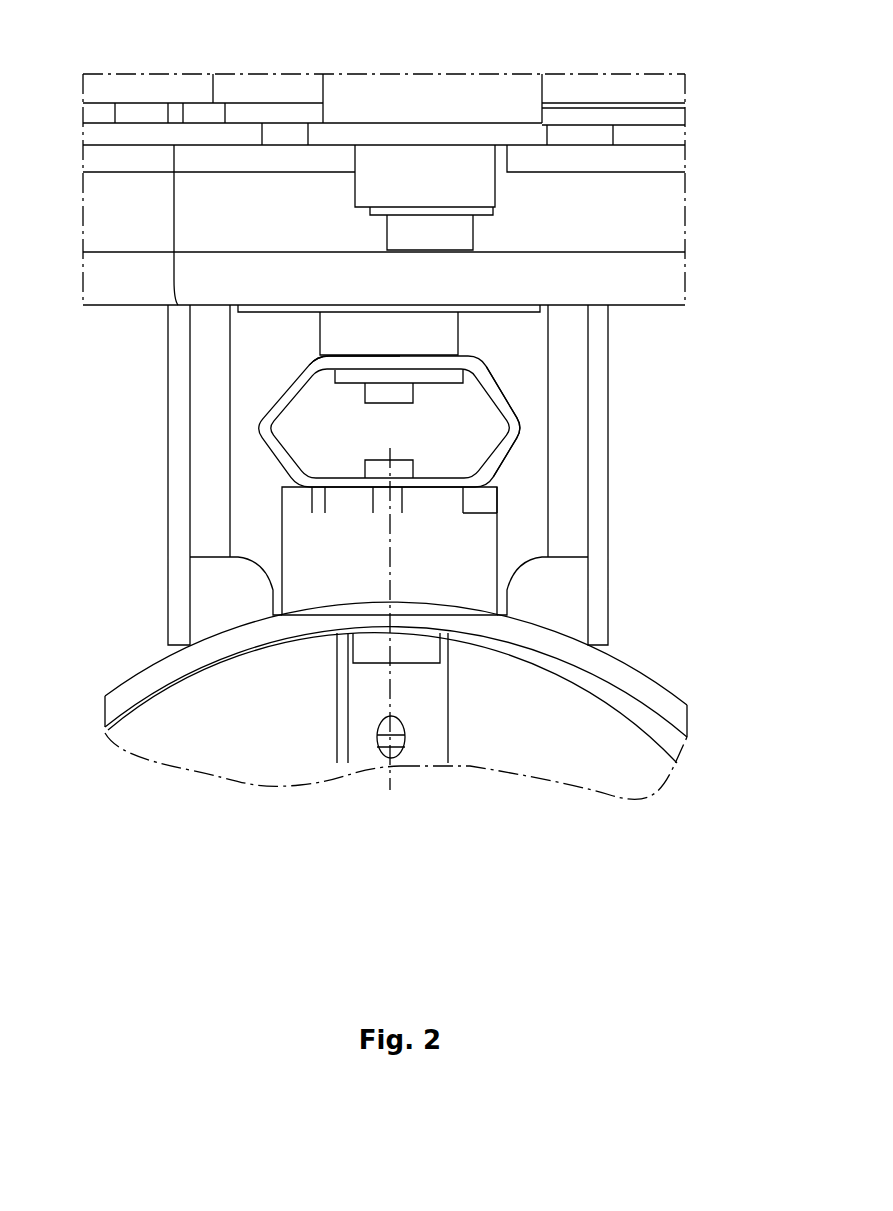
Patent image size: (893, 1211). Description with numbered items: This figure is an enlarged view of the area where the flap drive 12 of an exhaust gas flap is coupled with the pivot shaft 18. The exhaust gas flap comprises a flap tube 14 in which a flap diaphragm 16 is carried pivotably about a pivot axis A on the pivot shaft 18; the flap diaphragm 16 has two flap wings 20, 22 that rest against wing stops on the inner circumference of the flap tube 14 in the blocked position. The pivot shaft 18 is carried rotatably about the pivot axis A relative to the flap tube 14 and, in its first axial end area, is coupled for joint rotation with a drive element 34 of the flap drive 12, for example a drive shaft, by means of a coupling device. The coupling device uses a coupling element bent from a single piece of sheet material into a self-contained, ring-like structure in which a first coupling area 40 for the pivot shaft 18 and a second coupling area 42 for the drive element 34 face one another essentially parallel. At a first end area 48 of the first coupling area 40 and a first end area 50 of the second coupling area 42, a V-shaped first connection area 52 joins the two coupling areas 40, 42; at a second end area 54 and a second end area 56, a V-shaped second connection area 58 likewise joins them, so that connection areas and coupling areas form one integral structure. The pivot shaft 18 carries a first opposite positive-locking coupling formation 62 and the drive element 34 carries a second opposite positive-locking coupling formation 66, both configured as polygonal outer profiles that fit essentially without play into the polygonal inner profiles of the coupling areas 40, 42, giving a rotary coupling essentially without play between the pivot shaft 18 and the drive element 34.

The flap drive 12 is at (583, 102).
The flap tube 14 is at (672, 697).
The flap diaphragm 16 is at (360, 822).
The pivot shaft 18 is at (415, 652).
The flap wing 20 is at (245, 757).
The flap wing 22 is at (625, 778).
The drive element 34 is at (418, 327).
The first coupling area 40 is at (357, 505).
The second coupling area 42 is at (492, 357).
The first end area 48 is at (330, 487).
The first end area 50 is at (318, 358).
The first connection area 52 is at (255, 432).
The second end area 54 is at (497, 505).
The second end area 56 is at (487, 377).
The second connection area 58 is at (523, 422).
The first opposite positive-locking coupling formation 62 is at (430, 468).
The second opposite positive-locking coupling formation 66 is at (358, 408).
The pivot axis A is at (395, 577).